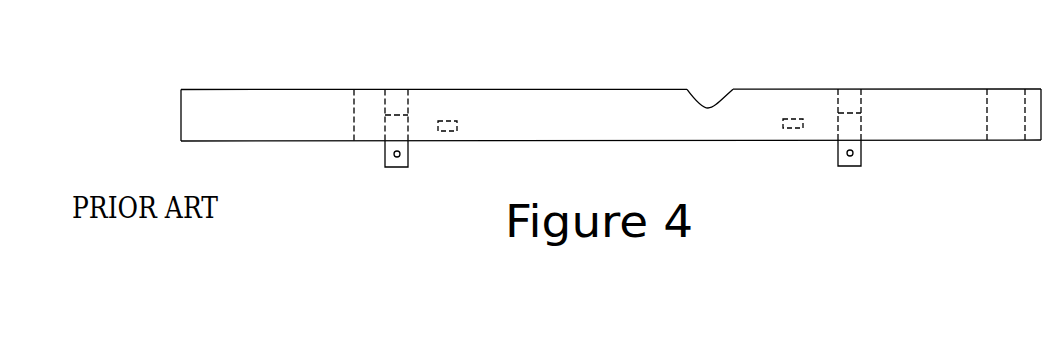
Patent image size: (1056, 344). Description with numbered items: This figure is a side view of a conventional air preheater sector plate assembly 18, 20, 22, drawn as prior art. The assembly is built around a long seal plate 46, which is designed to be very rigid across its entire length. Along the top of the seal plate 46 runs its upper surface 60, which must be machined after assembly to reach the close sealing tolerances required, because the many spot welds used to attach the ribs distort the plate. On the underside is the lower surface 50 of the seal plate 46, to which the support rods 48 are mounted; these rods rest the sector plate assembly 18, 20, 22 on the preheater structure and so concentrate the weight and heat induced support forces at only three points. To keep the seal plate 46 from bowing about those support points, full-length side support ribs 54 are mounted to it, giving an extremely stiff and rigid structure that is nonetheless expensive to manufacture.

The sector plate assembly 18 is at (431, 53).
The sector plate assembly 20 is at (611, 110).
The sector plate assembly 22 is at (611, 110).
The seal plate 46 is at (940, 89).
The support rod 48 is at (386, 167).
The lower surface 50 is at (727, 89).
The side support rib 54 is at (632, 125).
The upper surface 60 is at (628, 89).